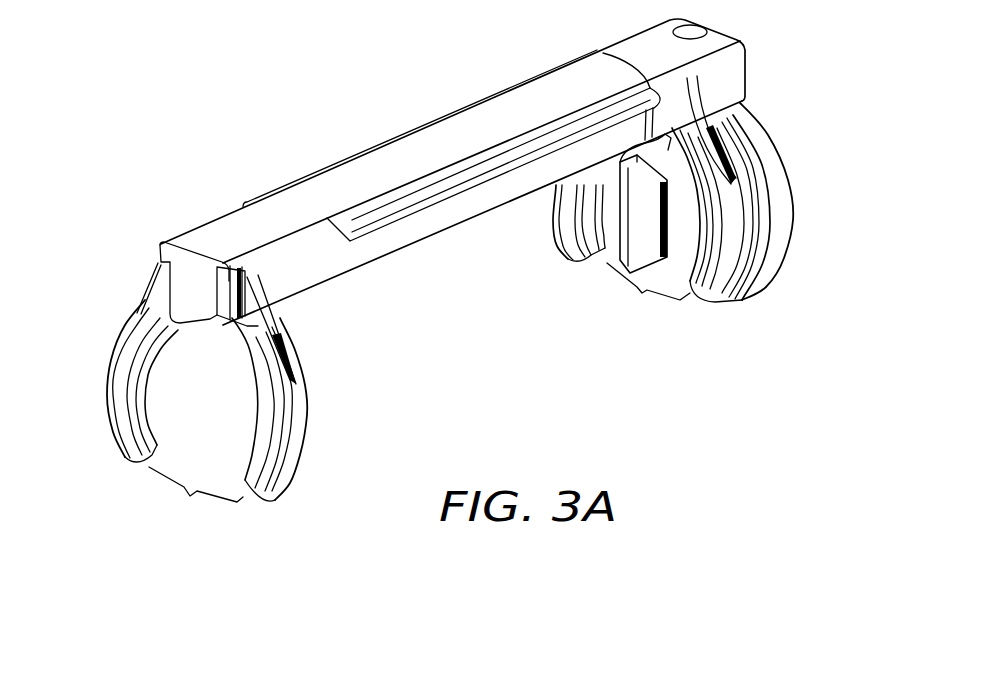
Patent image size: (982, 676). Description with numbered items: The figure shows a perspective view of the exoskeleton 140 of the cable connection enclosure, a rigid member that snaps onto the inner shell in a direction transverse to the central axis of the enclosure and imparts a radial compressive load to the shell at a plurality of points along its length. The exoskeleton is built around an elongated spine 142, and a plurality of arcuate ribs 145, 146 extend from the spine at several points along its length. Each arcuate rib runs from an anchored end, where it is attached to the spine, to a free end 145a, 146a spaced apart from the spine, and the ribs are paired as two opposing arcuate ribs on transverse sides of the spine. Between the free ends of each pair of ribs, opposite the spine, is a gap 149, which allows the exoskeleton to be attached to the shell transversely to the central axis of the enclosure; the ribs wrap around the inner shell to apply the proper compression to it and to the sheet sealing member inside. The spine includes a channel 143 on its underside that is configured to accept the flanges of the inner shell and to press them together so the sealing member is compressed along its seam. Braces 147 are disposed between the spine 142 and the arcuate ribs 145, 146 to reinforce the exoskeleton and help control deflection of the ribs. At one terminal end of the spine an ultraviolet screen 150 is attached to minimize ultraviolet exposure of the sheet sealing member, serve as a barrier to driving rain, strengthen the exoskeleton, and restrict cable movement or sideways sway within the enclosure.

The exoskeleton 140 is at (210, 106).
The spine 142 is at (316, 197).
The channel 143 is at (207, 298).
The arcuate rib 145 is at (143, 380).
The free end 145a is at (131, 452).
The arcuate rib 146 is at (553, 223).
The free end 146a is at (592, 236).
The brace 147 is at (266, 322).
The gap 149 is at (419, 396).
The ultraviolet screen 150 is at (777, 250).